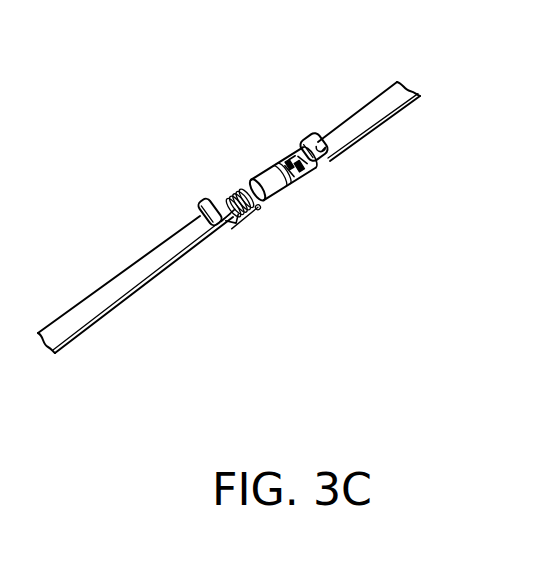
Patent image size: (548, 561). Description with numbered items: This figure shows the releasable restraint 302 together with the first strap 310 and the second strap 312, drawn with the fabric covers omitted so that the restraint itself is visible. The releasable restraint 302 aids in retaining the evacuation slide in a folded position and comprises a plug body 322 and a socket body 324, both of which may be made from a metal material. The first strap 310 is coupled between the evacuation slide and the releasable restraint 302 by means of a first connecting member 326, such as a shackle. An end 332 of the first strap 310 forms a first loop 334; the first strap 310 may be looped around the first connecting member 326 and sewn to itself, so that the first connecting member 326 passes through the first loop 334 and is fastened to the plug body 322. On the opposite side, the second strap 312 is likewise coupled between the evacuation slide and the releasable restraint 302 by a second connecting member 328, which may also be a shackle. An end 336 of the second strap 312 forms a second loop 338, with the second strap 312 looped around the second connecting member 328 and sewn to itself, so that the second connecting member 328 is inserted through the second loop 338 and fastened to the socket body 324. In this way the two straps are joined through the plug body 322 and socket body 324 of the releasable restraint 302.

The releasable restraint 302 is at (242, 136).
The first strap 310 is at (54, 321).
The second strap 312 is at (402, 98).
The plug body 322 is at (262, 208).
The socket body 324 is at (302, 178).
The first connecting member 326 is at (226, 200).
The second connecting member 328 is at (322, 156).
The end 332 is at (221, 258).
The first loop 334 is at (205, 204).
The end 336 is at (357, 166).
The second loop 338 is at (318, 135).